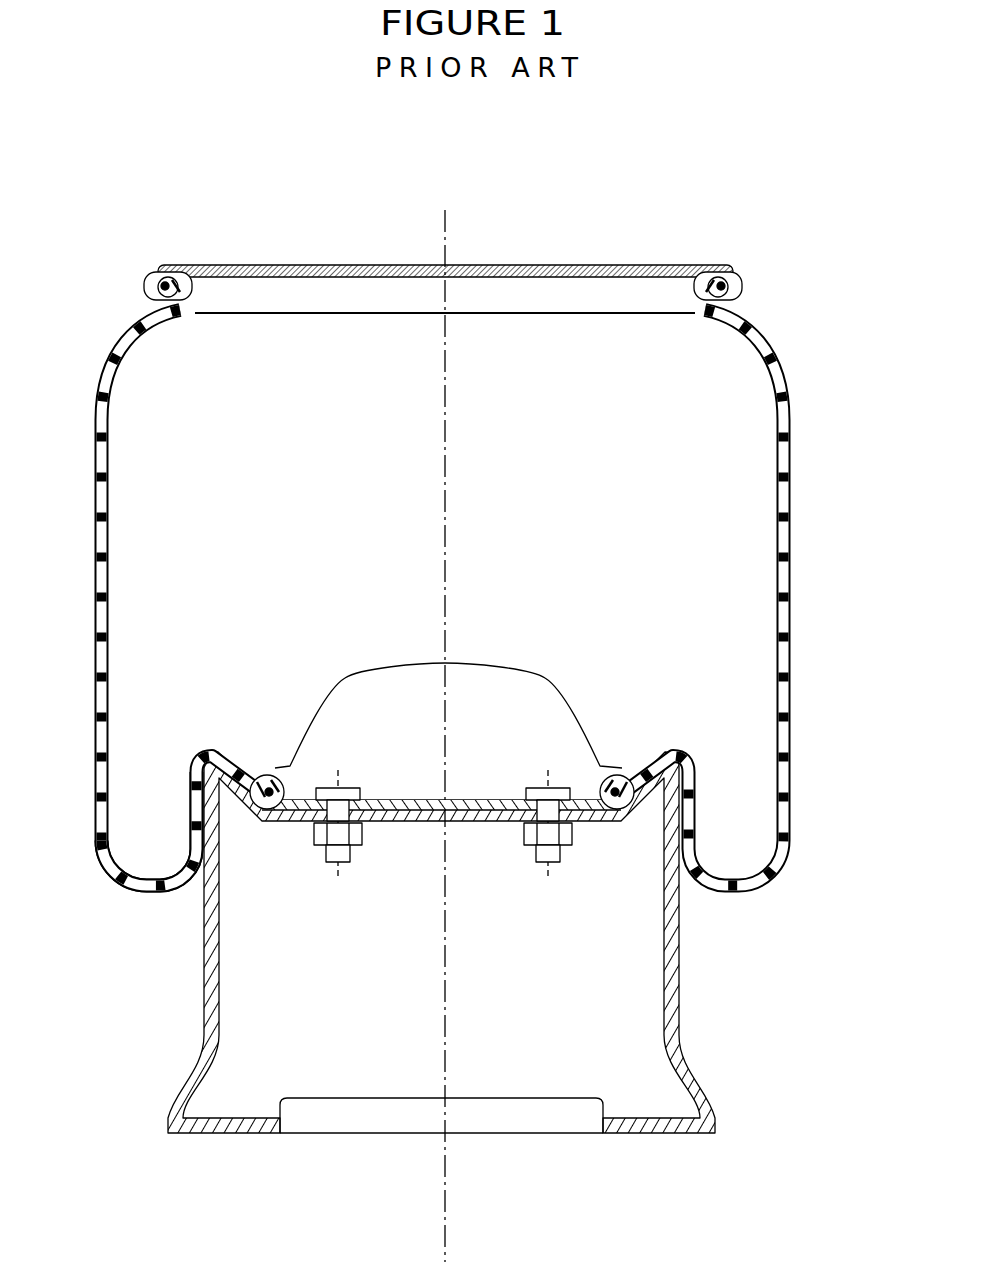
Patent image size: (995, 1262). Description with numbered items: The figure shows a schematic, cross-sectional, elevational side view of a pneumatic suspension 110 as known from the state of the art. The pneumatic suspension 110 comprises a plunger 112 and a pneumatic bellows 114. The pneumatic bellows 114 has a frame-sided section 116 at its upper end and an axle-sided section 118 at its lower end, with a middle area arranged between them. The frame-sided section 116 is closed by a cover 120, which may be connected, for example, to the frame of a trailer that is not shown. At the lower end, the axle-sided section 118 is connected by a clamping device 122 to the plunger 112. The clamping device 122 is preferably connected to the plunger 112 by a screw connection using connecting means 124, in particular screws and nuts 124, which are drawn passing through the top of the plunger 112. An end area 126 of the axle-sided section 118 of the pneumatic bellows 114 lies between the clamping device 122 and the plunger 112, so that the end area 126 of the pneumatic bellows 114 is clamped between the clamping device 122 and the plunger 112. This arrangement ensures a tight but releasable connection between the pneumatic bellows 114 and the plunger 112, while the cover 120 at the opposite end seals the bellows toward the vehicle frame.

The pneumatic suspension 110 is at (835, 311).
The plunger 112 is at (668, 1020).
The pneumatic bellows 114 is at (790, 716).
The frame-sided section 116 is at (92, 267).
The axle-sided section 118 is at (186, 762).
The cover 120 is at (368, 265).
The clamping device 122 is at (275, 770).
The connecting means 124 is at (324, 846).
The end area 126 is at (274, 818).